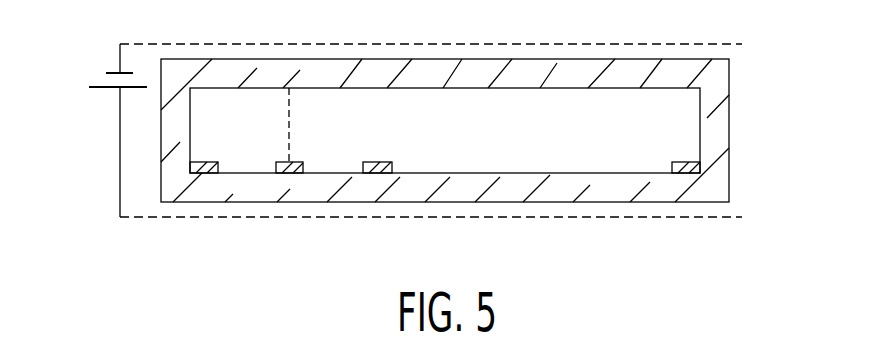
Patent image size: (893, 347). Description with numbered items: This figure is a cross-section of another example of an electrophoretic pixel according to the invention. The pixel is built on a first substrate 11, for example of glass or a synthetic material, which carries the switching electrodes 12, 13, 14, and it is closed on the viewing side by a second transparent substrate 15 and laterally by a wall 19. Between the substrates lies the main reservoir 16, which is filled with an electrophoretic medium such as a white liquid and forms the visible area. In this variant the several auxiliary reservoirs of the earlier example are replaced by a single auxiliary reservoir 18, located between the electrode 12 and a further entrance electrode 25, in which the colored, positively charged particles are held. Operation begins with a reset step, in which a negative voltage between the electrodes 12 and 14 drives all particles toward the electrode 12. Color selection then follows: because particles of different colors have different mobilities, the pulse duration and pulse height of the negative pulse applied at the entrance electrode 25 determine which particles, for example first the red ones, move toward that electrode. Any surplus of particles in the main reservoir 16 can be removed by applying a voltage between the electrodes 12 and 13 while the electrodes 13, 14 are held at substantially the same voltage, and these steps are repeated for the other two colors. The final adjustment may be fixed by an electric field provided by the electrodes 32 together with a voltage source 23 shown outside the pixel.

The first substrate 11 is at (429, 187).
The switching electrode 12 is at (207, 174).
The switching electrode 13 is at (380, 174).
The switching electrode 14 is at (683, 174).
The second transparent substrate 15 is at (573, 72).
The main reservoir 16 is at (483, 135).
The auxiliary reservoir 18 is at (240, 135).
The wall 19 is at (720, 128).
The battery 23 is at (107, 73).
The entrance electrode 25 is at (290, 174).
The electrodes 32 is at (717, 44).